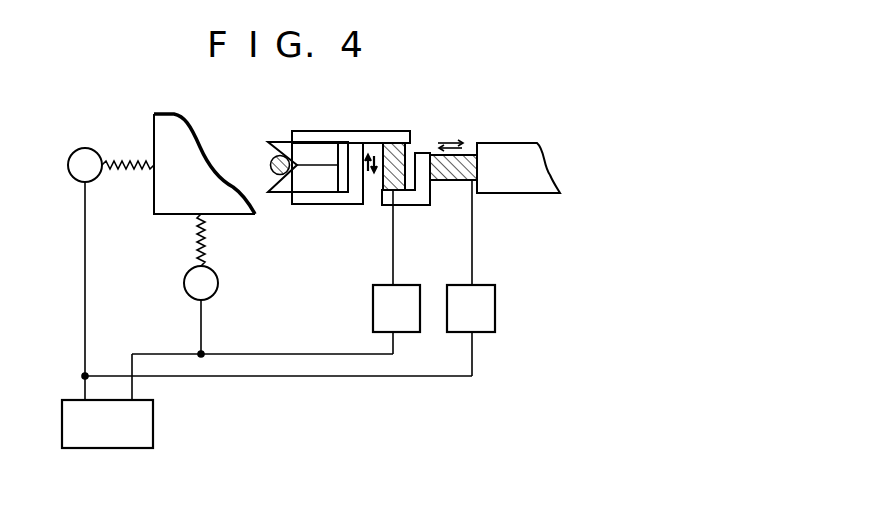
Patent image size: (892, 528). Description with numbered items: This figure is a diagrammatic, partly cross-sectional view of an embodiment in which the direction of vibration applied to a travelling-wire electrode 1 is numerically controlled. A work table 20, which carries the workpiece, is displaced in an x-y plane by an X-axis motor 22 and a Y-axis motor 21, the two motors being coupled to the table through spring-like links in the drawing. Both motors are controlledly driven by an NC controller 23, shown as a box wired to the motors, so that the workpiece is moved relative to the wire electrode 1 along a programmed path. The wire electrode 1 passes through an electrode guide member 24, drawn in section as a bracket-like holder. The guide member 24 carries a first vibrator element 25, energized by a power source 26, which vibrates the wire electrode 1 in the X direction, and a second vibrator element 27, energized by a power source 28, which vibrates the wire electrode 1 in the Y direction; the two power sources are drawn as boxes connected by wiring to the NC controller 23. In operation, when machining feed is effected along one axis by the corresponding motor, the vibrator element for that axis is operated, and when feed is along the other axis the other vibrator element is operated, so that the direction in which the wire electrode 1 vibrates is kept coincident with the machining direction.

The travelling-wire electrode 1 is at (270, 160).
The work table 20 is at (157, 211).
The Y-axis motor 21 is at (218, 286).
The X-axis motor 22 is at (73, 180).
The NC controller 23 is at (153, 430).
The electrode guide member 24 is at (318, 152).
The first vibrator element 25 is at (412, 152).
The power source 26 is at (373, 303).
The second vibrator element 27 is at (448, 180).
The power source 28 is at (495, 305).